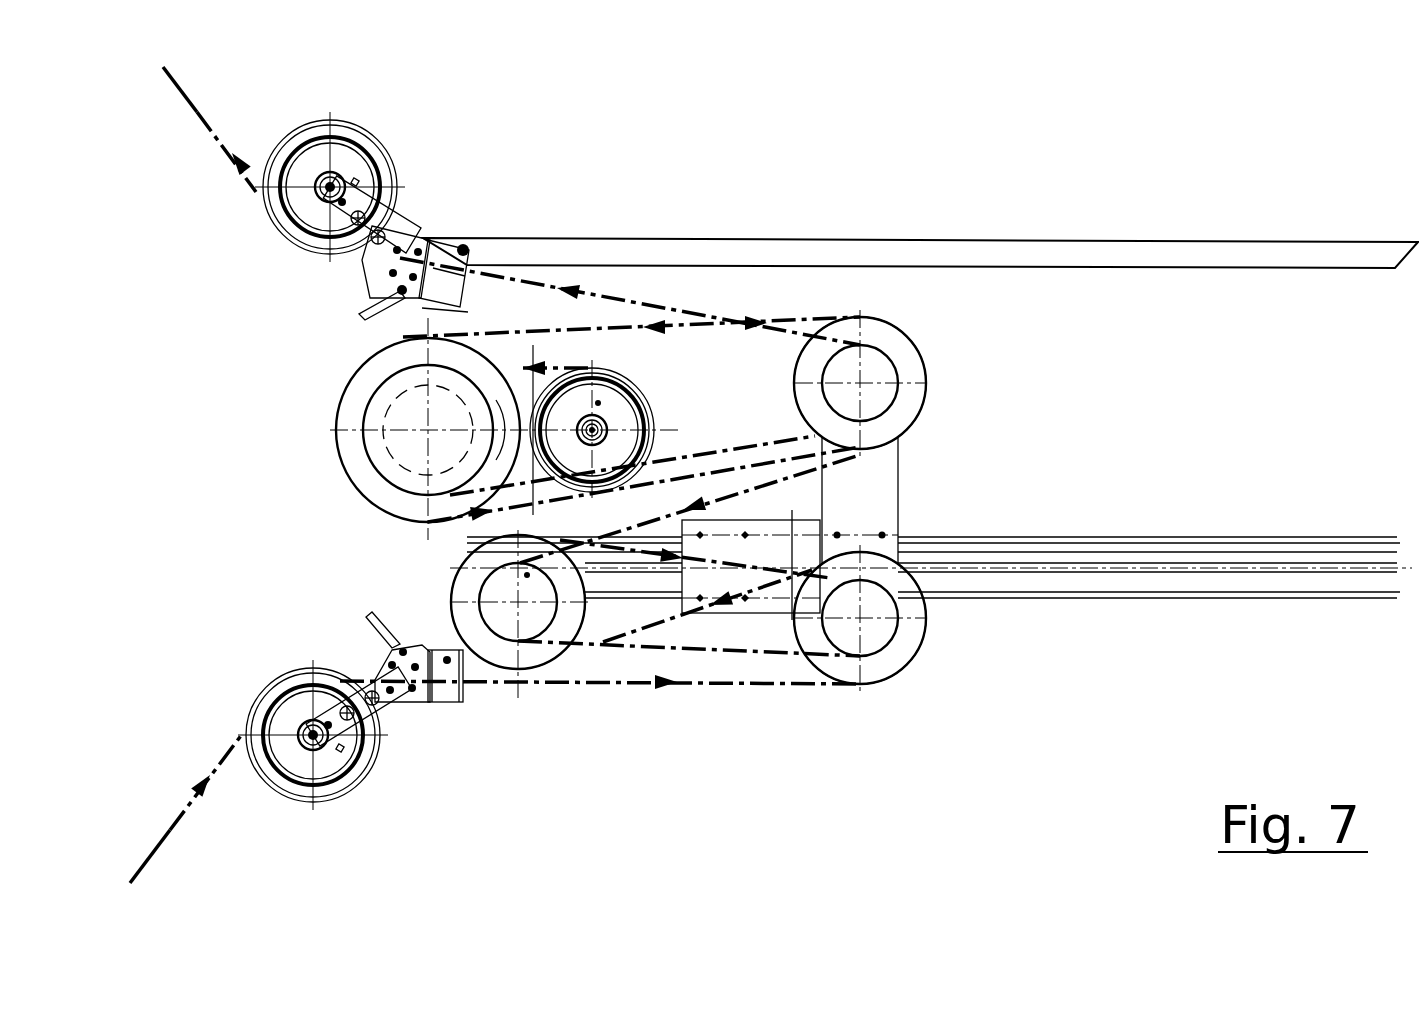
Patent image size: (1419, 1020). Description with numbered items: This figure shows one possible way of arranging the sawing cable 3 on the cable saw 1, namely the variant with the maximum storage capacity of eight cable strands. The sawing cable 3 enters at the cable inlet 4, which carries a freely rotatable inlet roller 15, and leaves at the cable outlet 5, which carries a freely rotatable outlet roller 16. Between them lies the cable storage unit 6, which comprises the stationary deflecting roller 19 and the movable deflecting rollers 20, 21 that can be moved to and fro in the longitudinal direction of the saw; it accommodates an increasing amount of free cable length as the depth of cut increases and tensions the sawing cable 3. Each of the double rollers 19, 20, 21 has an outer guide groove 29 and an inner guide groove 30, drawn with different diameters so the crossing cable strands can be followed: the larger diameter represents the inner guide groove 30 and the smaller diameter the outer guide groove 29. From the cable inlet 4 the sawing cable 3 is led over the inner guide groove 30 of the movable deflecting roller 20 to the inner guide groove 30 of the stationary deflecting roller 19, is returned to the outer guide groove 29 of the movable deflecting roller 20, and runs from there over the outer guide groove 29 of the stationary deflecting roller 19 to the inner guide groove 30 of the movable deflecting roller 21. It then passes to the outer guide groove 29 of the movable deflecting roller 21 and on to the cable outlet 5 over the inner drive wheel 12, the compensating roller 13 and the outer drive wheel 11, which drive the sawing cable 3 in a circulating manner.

The cable saw 1 is at (806, 188).
The sawing cable 3 is at (198, 787).
The cable inlet 4 is at (364, 742).
The inlet roller 15 is at (357, 782).
The cable outlet 5 is at (381, 203).
The outlet roller 16 is at (377, 158).
The cable storage unit 6 is at (1100, 457).
The drive wheel 11 is at (373, 472).
The drive wheel 12 is at (337, 400).
The compensating roller 13 is at (650, 415).
The stationary deflecting roller 19 is at (558, 652).
The movable deflecting roller 20 is at (840, 658).
The movable deflecting roller 21 is at (913, 372).
The outer guide groove 29 is at (887, 355).
The inner guide groove 30 is at (920, 413).